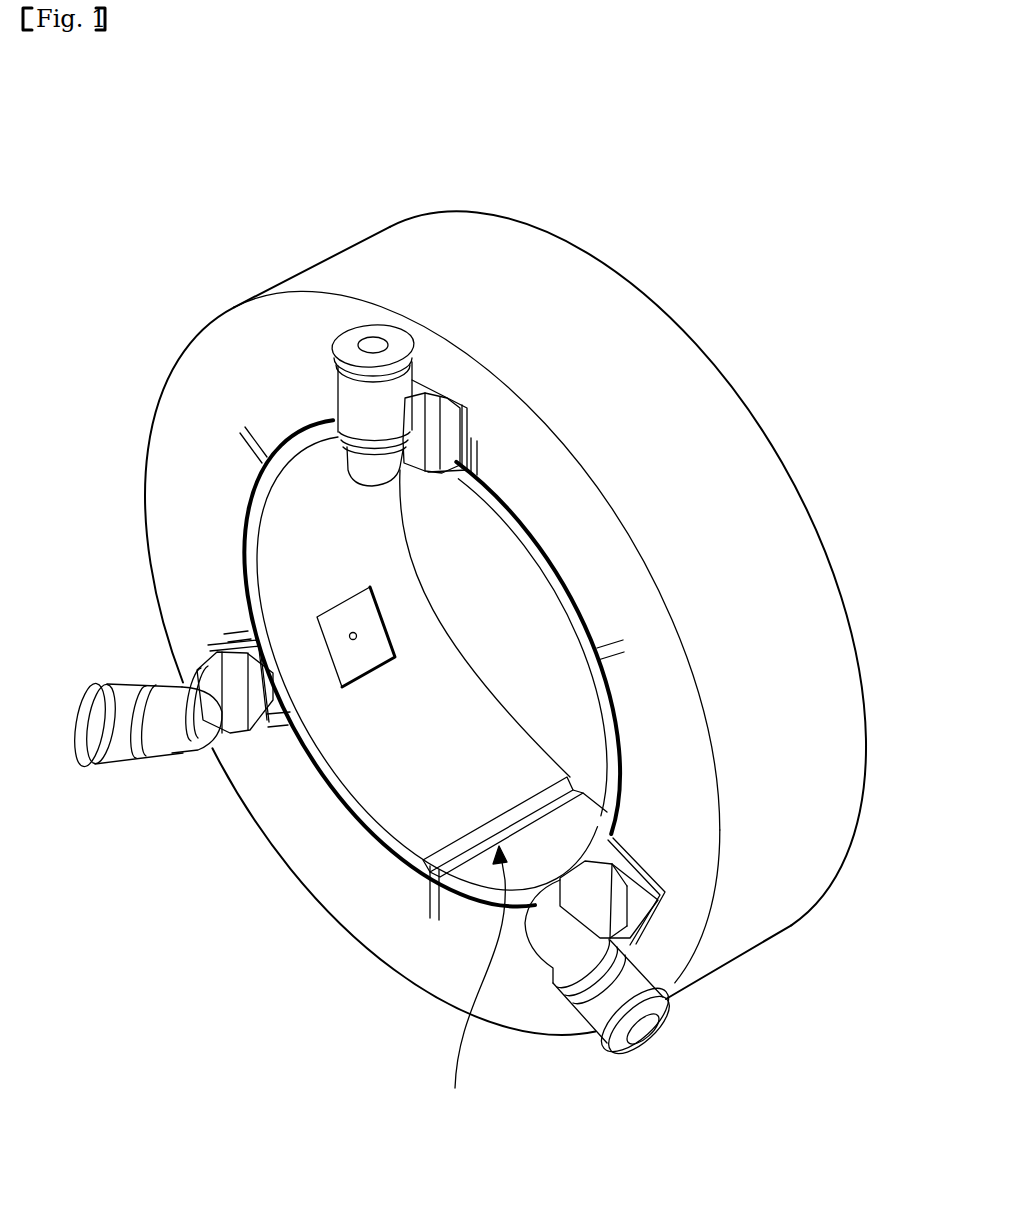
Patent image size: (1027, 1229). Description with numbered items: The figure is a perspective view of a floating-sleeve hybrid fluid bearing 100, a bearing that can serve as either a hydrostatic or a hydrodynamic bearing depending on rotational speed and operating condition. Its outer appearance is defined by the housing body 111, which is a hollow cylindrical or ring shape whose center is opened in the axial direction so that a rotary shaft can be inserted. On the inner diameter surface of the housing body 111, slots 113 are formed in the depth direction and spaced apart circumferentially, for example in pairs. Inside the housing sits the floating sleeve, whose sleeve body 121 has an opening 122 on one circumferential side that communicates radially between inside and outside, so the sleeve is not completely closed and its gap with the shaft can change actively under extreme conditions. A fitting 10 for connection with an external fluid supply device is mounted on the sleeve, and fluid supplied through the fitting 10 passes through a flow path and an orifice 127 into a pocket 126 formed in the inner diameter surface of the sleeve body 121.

The floating-sleeve hybrid fluid bearing 100 is at (198, 117).
The housing body 111 is at (617, 310).
The slot 113 is at (247, 453).
The fitting 10 is at (347, 403).
The sleeve body 121 is at (430, 820).
The opening 122 is at (468, 987).
The pocket 126 is at (352, 667).
The orifice 127 is at (353, 636).